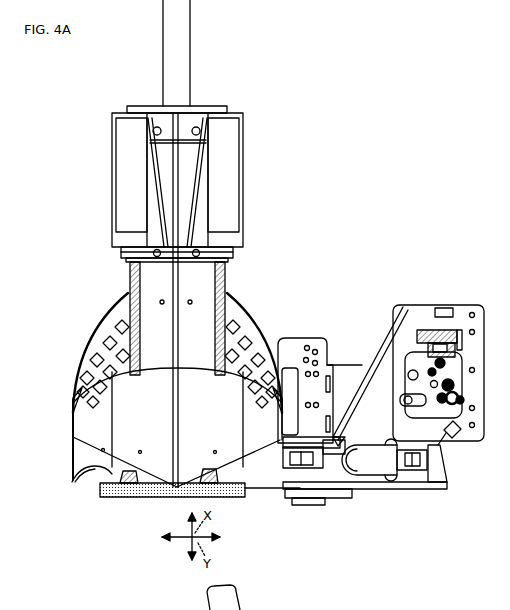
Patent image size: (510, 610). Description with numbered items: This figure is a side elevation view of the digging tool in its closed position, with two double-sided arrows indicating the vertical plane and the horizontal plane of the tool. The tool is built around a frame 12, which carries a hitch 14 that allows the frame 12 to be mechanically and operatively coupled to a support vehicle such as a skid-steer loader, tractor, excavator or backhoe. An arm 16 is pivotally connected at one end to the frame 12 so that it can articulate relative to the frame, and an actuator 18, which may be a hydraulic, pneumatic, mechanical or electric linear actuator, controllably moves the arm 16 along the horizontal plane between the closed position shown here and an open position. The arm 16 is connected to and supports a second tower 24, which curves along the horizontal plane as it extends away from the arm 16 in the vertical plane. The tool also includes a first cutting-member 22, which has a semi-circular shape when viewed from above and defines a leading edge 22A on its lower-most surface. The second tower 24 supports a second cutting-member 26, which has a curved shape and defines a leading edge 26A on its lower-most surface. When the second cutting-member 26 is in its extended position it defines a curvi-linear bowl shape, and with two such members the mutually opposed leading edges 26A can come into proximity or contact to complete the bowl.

The frame 12 is at (443, 484).
The hitch 14 is at (452, 305).
The arm 16 is at (360, 490).
The actuator 18 is at (380, 497).
The first cutting-member 22 is at (53, 400).
The leading edge 22A is at (80, 472).
The second tower 24 is at (243, 152).
The second cutting-member 26 is at (268, 356).
The leading edge 26A is at (112, 494).